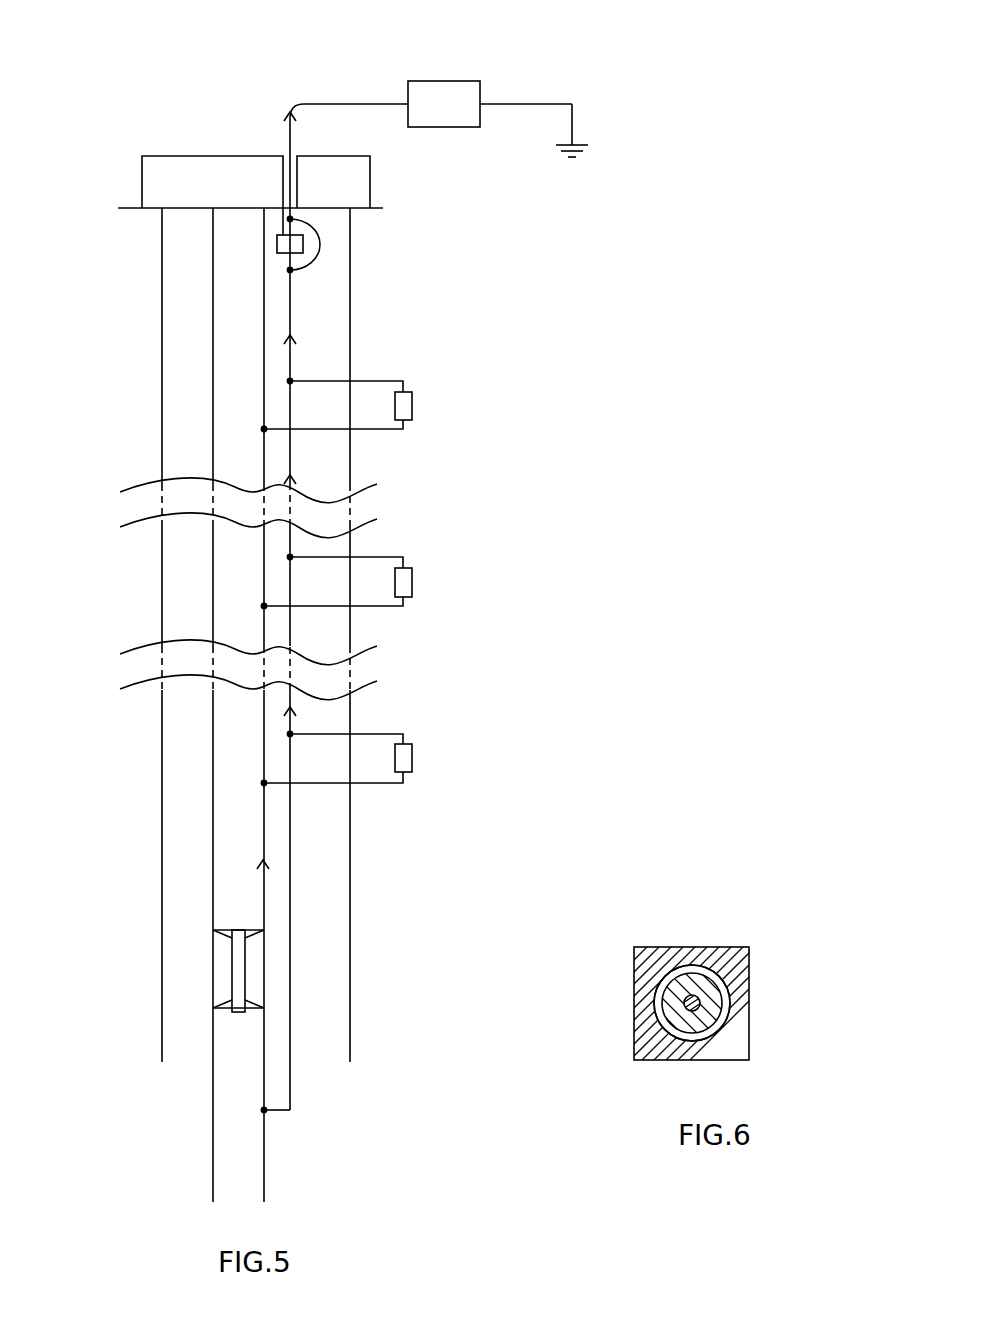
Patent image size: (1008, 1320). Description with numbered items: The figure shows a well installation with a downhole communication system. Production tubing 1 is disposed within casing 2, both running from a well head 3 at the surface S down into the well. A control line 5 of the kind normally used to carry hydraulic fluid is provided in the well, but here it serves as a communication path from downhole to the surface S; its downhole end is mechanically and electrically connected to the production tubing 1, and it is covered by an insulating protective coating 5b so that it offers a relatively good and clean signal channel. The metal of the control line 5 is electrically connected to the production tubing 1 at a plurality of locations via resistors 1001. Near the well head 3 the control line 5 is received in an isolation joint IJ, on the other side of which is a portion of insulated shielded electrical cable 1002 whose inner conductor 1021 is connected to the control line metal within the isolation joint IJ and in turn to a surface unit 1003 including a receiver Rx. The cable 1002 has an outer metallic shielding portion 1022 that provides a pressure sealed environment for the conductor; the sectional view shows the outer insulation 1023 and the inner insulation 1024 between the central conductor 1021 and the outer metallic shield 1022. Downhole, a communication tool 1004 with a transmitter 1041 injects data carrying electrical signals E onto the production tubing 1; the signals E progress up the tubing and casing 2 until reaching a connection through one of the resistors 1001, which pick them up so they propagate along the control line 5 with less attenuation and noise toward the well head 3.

In FIG. 5, the production tubing 1 is at (213, 303).
In FIG. 5, the casing 2 is at (162, 353).
In FIG. 5, the well head 3 is at (173, 175).
In FIG. 5, the surface S is at (127, 207).
In FIG. 5, the control line 5 is at (290, 887).
In FIG. 5, the insulating protective coating 5b is at (290, 823).
In FIG. 5, the resistors 1001 is at (407, 404).
In FIG. 5, the insulated shielded electrical cable 1002 is at (315, 175).
In FIG. 5, the surface unit 1003 is at (470, 87).
In FIG. 5, the downhole communication tool 1004 is at (228, 978).
In FIG. 5, the transmitter 1041 is at (238, 955).
In FIG. 5, the inner conductor 1021 is at (286, 132).
In FIG. 6, the inner conductor 1021 is at (697, 1000).
In FIG. 5, the outer metallic shielding portion 1022 is at (348, 215).
In FIG. 6, the outer metallic shielding portion 1022 is at (707, 1030).
In FIG. 6, the outer insulation 1023 is at (717, 950).
In FIG. 6, the inner insulation 1024 is at (673, 1002).
In FIG. 5, the isolation joint IJ is at (303, 245).
In FIG. 5, the electrical signals E is at (296, 478).